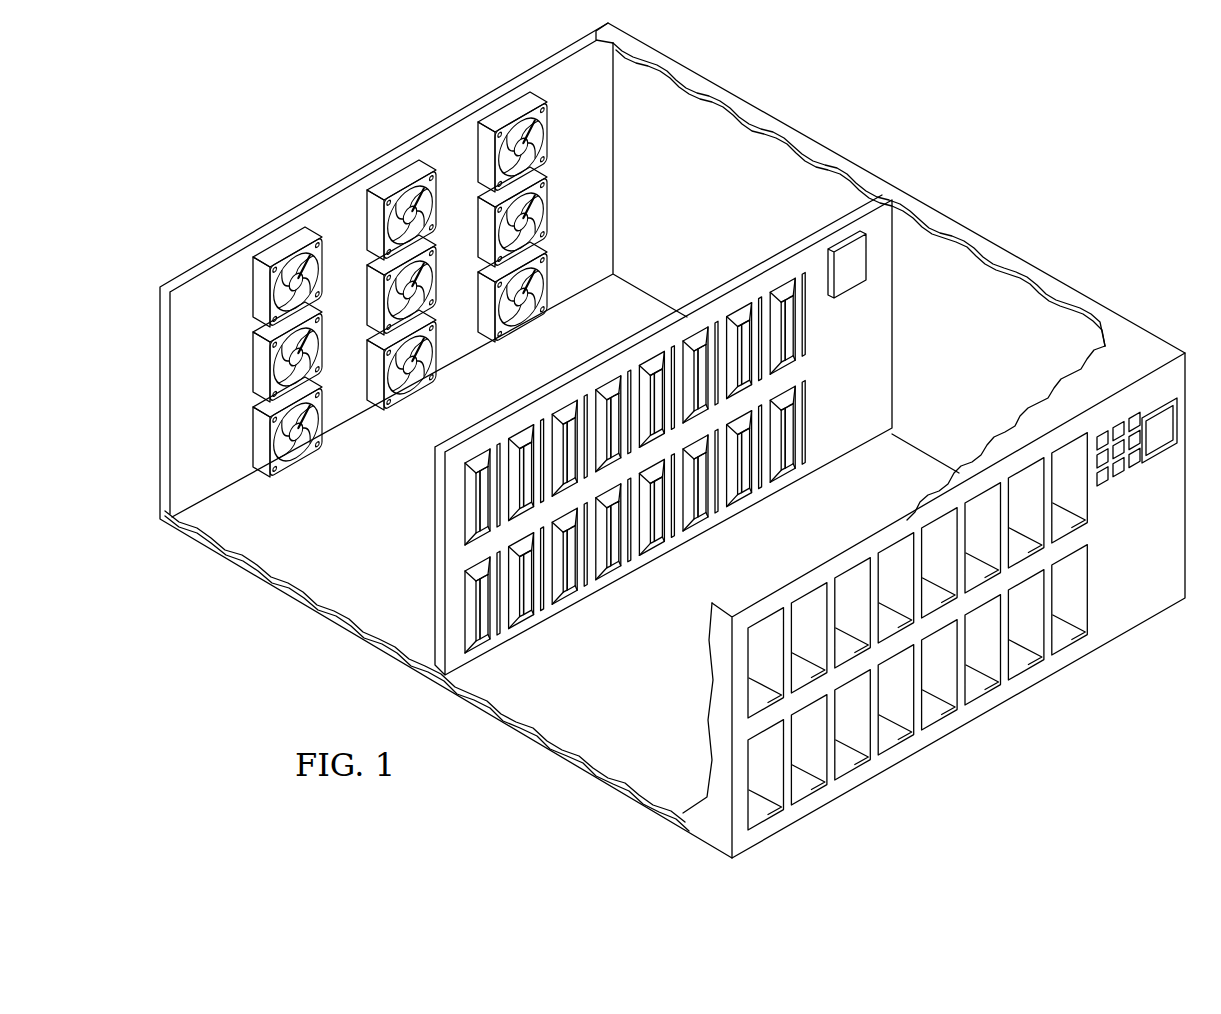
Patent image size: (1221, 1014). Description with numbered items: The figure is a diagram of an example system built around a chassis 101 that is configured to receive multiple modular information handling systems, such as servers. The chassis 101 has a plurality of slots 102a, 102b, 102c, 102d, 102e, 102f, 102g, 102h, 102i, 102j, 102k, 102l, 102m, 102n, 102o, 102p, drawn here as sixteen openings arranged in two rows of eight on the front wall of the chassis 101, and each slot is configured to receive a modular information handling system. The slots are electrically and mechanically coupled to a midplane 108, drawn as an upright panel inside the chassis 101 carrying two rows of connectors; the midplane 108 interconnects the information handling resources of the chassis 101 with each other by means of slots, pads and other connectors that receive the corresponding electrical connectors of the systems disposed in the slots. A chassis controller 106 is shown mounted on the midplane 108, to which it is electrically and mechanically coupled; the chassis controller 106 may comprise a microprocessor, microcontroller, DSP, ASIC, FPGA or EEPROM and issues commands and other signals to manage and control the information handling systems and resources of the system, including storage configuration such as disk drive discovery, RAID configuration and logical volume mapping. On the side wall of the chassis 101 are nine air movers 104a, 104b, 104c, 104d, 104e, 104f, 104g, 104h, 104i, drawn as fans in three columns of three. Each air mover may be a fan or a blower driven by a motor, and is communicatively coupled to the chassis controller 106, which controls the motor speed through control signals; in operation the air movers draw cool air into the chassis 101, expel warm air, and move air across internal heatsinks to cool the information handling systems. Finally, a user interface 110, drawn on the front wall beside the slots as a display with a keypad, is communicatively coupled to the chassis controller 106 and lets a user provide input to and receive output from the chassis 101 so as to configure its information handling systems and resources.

The chassis 101 is at (992, 243).
The slot 102a is at (762, 637).
The slot 102b is at (805, 612).
The slot 102c is at (849, 587).
The slot 102d is at (892, 562).
The slot 102e is at (936, 537).
The slot 102f is at (979, 512).
The slot 102g is at (1023, 487).
The slot 102h is at (1066, 462).
The slot 102i is at (762, 813).
The slot 102j is at (805, 788).
The slot 102k is at (849, 763).
The slot 102l is at (892, 738).
The slot 102m is at (936, 713).
The slot 102n is at (979, 688).
The slot 102o is at (1023, 663).
The slot 102p is at (1066, 638).
The air mover 104a is at (287, 245).
The air mover 104b is at (400, 178).
The air mover 104c is at (512, 113).
The air mover 104d is at (258, 365).
The air mover 104e is at (370, 287).
The air mover 104f is at (485, 222).
The air mover 104g is at (258, 434).
The air mover 104h is at (436, 352).
The air mover 104i is at (548, 284).
The chassis controller 106 is at (855, 262).
The midplane 108 is at (757, 266).
The user interface 110 is at (1128, 473).